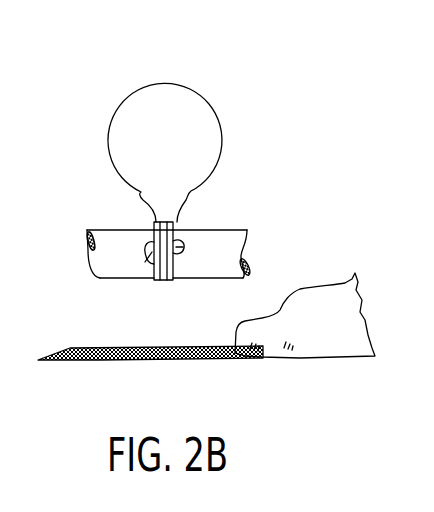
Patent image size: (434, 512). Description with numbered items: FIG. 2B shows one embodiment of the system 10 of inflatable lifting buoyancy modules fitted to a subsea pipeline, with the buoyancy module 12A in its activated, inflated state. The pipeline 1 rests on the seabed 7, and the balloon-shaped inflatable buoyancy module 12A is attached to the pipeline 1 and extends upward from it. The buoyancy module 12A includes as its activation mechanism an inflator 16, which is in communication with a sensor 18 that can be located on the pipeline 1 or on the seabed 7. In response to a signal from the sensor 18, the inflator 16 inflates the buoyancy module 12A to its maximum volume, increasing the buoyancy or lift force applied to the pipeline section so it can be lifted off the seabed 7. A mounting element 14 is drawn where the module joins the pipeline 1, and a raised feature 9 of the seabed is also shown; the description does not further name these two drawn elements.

The system 10 is at (181, 126).
The lifting buoyancy module 12A is at (207, 129).
The pipeline 1 is at (102, 268).
The mounting collar 14 is at (177, 270).
The inflator 16 is at (145, 263).
The sensor 18 is at (181, 242).
The seabed 7 is at (68, 352).
The ground 9 is at (340, 328).